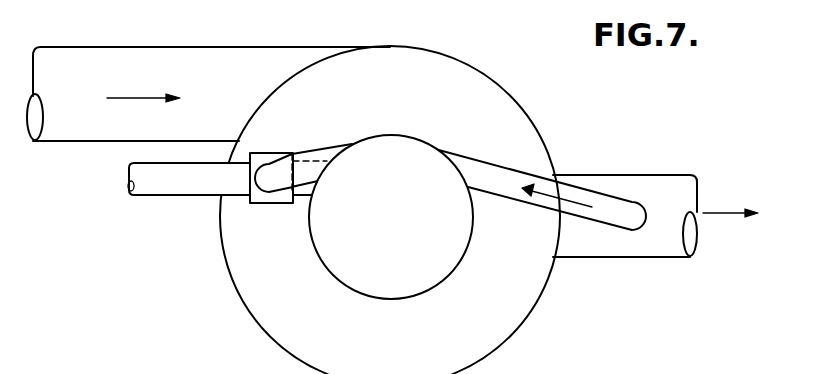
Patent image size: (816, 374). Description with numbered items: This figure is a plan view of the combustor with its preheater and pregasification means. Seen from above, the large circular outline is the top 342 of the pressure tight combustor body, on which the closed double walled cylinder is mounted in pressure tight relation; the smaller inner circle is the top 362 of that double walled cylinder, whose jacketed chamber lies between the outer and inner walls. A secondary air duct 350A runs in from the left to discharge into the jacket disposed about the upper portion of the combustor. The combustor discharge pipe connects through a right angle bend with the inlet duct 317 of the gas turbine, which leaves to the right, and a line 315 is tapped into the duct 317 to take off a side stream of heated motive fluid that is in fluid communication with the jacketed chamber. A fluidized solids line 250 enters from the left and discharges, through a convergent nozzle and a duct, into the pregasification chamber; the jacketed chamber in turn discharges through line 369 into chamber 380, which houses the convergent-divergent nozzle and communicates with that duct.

The secondary air duct 350A is at (174, 34).
The fluidized solids line 250 is at (185, 192).
The chamber 380 is at (274, 202).
The line 369 is at (327, 152).
The top 362 is at (325, 238).
The top 342 is at (527, 293).
The line 315 is at (490, 167).
The inlet duct 317 is at (624, 160).